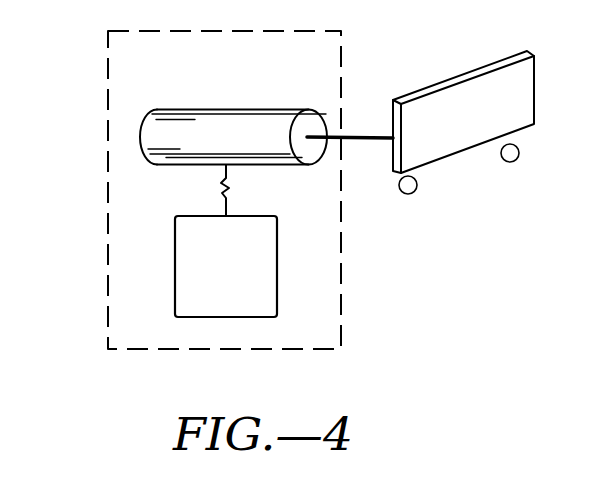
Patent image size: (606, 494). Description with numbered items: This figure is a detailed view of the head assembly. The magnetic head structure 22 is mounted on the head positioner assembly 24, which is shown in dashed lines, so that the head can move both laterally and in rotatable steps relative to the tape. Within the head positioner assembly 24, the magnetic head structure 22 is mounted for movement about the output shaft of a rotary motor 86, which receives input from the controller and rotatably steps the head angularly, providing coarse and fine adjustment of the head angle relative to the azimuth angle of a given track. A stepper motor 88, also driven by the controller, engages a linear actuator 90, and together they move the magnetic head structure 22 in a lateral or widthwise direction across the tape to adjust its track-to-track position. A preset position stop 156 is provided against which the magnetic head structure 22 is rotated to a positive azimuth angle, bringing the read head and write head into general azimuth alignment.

The magnetic head structure 22 is at (537, 85).
The head positioner assembly 24 is at (106, 254).
The rotary motor 86 is at (189, 109).
The stepper motor 88 is at (278, 283).
The linear actuator 90 is at (229, 191).
The preset position stop 156 is at (504, 160).